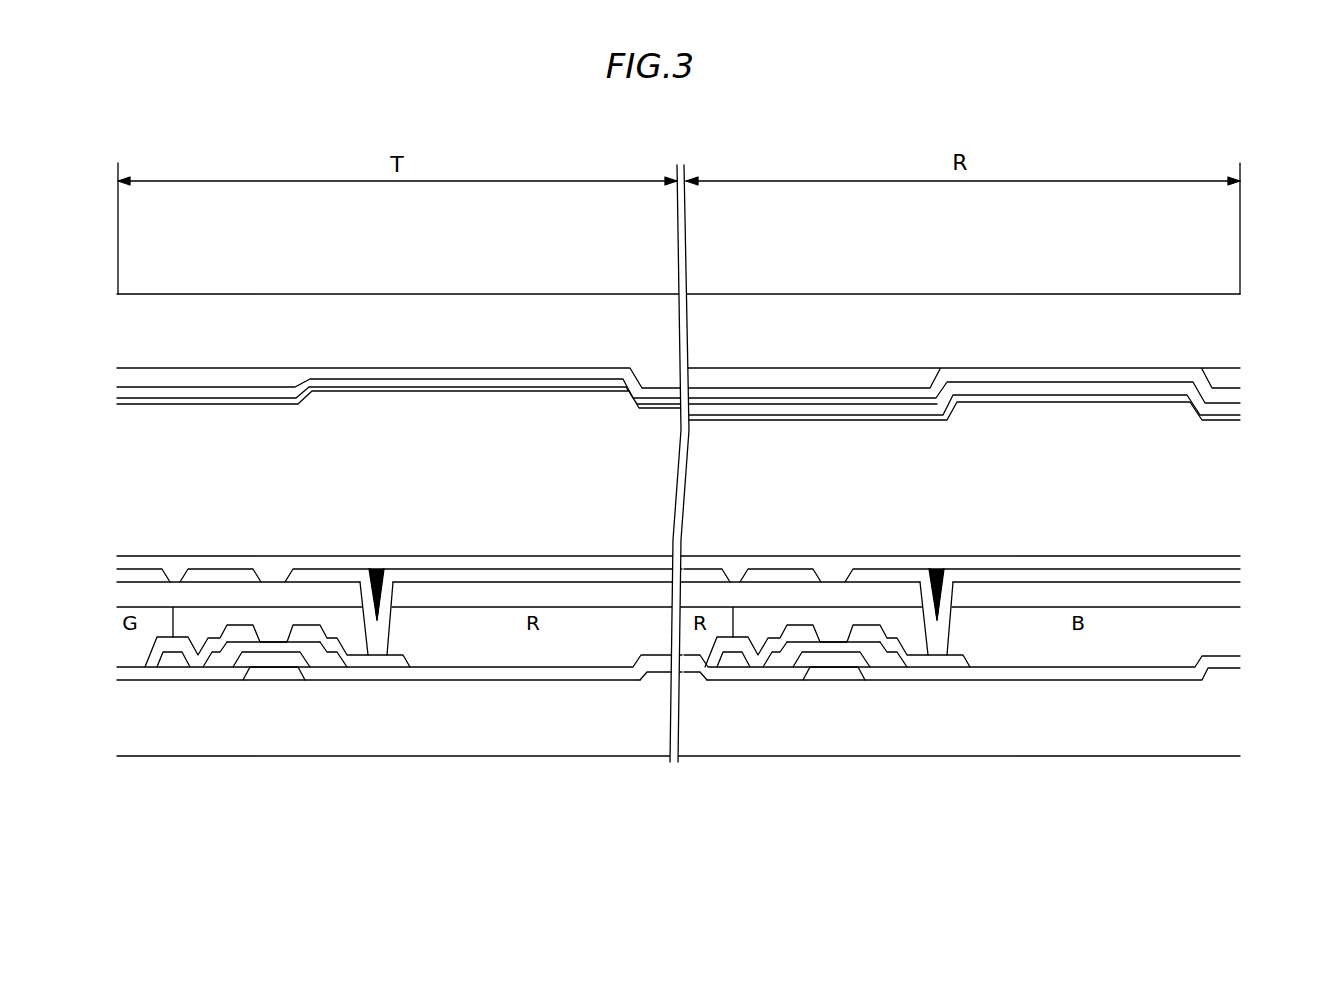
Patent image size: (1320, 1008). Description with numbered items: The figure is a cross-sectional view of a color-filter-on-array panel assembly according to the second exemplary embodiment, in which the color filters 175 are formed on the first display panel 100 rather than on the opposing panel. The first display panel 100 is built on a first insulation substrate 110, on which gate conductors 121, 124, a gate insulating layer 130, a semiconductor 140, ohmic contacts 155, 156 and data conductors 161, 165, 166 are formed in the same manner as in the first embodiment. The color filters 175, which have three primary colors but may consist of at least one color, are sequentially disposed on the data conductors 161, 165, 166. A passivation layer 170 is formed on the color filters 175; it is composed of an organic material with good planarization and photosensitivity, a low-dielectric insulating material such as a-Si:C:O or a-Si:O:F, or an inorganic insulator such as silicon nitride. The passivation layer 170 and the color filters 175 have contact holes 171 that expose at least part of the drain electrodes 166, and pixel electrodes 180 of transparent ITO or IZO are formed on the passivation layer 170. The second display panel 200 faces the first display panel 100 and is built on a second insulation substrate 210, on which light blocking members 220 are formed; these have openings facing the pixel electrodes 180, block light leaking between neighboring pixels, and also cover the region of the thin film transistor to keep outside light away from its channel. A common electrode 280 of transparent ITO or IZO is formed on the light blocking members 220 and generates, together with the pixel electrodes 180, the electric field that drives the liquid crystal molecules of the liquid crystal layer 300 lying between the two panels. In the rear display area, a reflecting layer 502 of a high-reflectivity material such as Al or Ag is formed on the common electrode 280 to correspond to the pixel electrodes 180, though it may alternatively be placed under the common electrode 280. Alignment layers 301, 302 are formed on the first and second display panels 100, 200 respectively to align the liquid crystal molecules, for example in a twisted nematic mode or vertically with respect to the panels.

The first display panel 100 is at (1082, 760).
The first insulation substrate 110 is at (478, 740).
The gate conductor 121 is at (653, 675).
The gate conductor 124 is at (278, 673).
The gate insulating layer 130 is at (435, 673).
The semiconductor 140 is at (260, 652).
The ohmic contact 155 is at (235, 652).
The ohmic contact 156 is at (295, 648).
The data conductor 161 is at (148, 667).
The data conductor 165 is at (212, 667).
The drain electrode 166 is at (360, 662).
The passivation layer 170 is at (583, 590).
The contact hole 171 is at (377, 566).
The color filter 175 is at (517, 652).
The pixel electrode 180 is at (512, 580).
The second display panel 200 is at (190, 293).
The second insulation substrate 210 is at (310, 313).
The light blocking member 220 is at (245, 380).
The common electrode 280 is at (408, 376).
The liquid crystal layer 300 is at (127, 498).
The alignment layer 301 is at (172, 558).
The alignment layer 302 is at (178, 404).
The reflecting layer 502 is at (1010, 390).